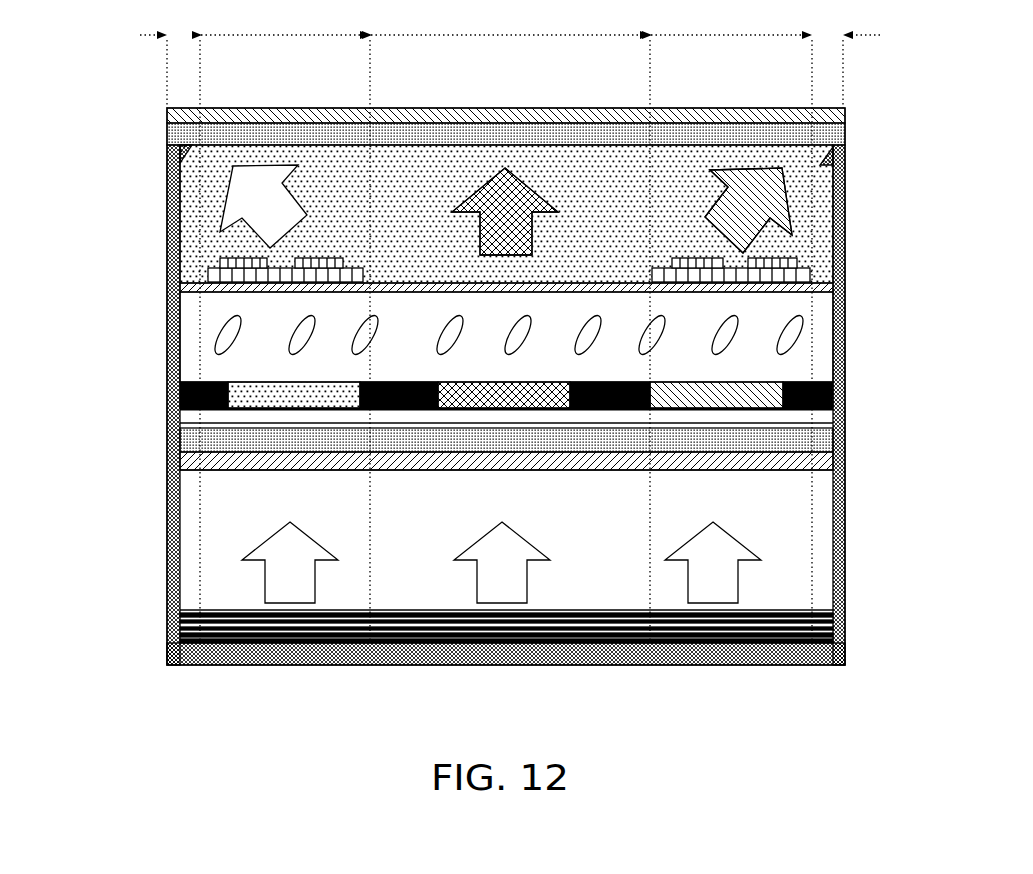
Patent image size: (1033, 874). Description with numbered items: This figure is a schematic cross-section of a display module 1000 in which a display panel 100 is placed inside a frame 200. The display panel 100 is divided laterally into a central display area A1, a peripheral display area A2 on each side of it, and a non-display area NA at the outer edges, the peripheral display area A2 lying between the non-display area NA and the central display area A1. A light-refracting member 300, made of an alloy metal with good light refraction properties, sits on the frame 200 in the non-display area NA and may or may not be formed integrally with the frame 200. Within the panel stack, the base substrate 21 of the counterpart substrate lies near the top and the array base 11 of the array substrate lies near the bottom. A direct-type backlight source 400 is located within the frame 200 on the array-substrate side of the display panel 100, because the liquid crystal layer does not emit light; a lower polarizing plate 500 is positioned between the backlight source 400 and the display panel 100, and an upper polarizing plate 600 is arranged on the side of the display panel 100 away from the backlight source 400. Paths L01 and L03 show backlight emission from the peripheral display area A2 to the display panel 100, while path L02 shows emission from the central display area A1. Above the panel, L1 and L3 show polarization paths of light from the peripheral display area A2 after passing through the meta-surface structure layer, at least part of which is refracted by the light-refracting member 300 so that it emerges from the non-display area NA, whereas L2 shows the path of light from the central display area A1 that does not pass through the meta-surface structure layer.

The display module 1000 is at (145, 73).
The display panel 100 is at (450, 282).
The base substrate 21 is at (188, 135).
The array base 11 is at (183, 450).
The upper polarizing plate 600 is at (845, 112).
The light-refracting member 300 is at (845, 155).
The frame 200 is at (178, 313).
The lower polarizing plate 500 is at (845, 460).
The backlight source 400 is at (824, 617).
The polarization path of light from peripheral display area L1 is at (762, 203).
The path of light from central display area L2 is at (512, 203).
The polarization path of light from peripheral display area L3 is at (260, 213).
The backlight emission path L01 is at (729, 578).
The backlight emission path L02 is at (502, 582).
The backlight emission path L03 is at (282, 578).
The non-display area NA is at (510, 21).
The central display area A1 is at (510, 21).
The peripheral display area A2 is at (506, 21).